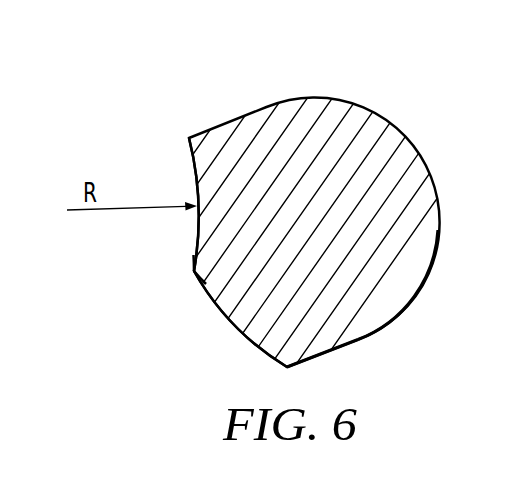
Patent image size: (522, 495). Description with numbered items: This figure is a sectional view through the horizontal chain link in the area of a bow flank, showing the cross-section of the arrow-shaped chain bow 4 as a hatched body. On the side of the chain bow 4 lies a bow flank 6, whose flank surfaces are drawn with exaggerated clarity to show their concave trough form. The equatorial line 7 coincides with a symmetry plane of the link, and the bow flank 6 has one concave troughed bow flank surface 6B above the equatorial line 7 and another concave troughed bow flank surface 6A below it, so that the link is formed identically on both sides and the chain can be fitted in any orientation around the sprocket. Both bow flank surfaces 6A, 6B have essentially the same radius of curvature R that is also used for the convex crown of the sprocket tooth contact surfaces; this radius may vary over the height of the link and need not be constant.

The chain bow 4 is at (327, 123).
The bow flank 6 is at (182, 252).
The bow flank surface 6A is at (238, 313).
The bow flank surface 6B is at (196, 180).
The equatorial line 7 is at (178, 270).